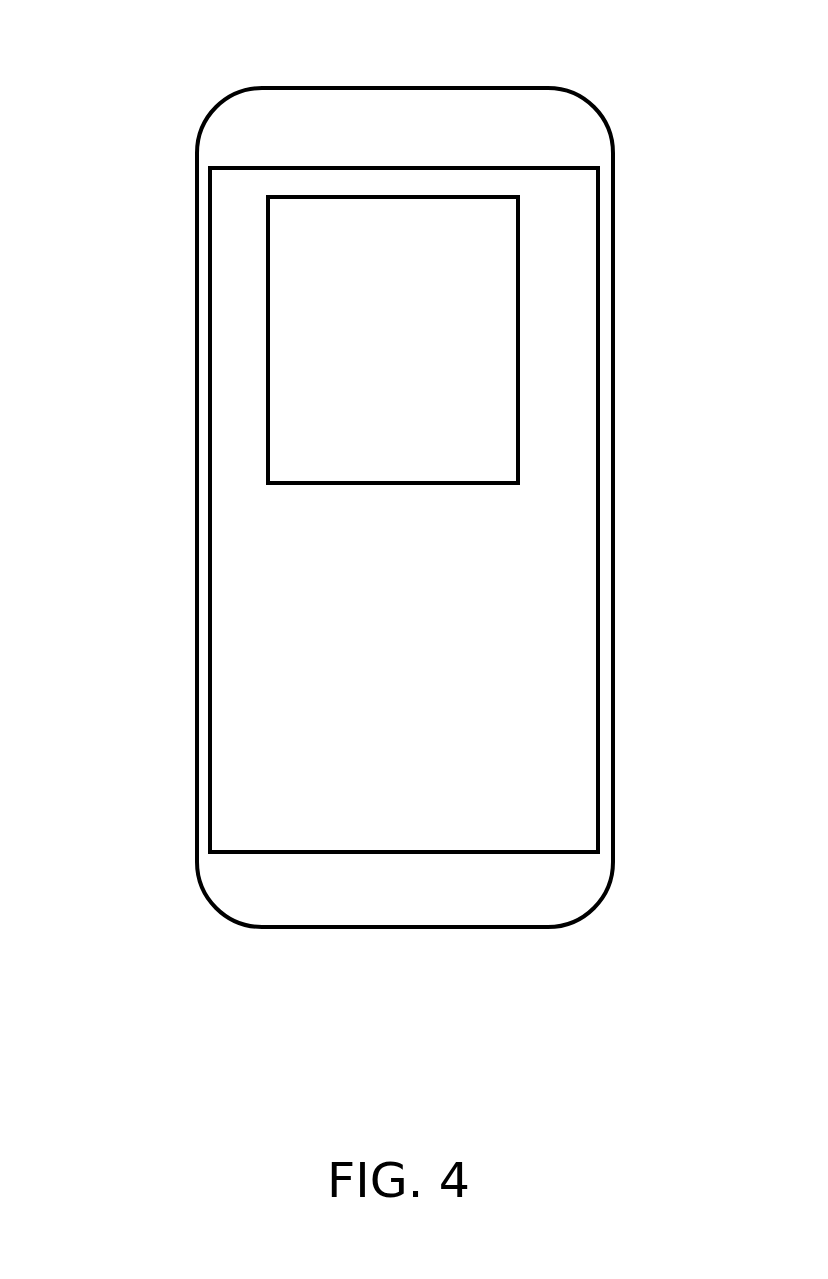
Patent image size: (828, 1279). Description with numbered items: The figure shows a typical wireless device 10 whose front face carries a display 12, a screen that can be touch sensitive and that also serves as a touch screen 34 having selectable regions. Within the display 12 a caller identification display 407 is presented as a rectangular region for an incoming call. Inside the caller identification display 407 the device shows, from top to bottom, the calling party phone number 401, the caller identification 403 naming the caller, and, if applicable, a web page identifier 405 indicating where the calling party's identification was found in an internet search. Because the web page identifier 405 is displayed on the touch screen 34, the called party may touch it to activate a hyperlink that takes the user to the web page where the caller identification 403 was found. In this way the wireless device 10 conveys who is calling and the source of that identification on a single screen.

The wireless device 10 is at (268, 60).
The display 12 is at (552, 200).
The touch screen 34 is at (565, 377).
The calling party phone number 401 is at (286, 250).
The caller identification 403 is at (286, 325).
The web page identifier 405 is at (283, 425).
The caller identification display 407 is at (255, 463).